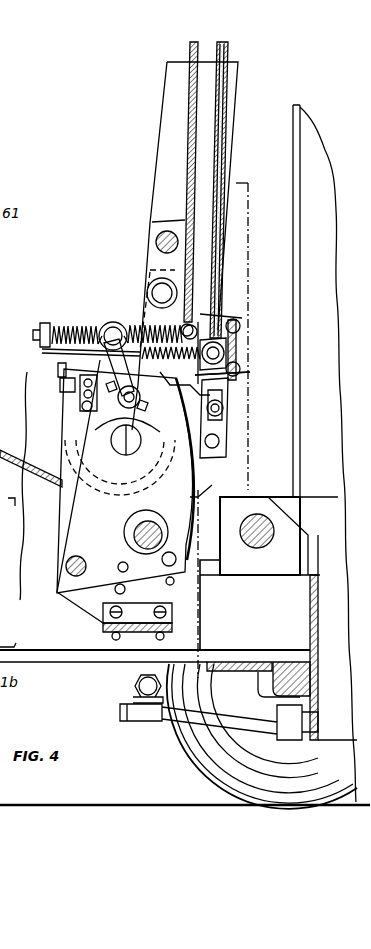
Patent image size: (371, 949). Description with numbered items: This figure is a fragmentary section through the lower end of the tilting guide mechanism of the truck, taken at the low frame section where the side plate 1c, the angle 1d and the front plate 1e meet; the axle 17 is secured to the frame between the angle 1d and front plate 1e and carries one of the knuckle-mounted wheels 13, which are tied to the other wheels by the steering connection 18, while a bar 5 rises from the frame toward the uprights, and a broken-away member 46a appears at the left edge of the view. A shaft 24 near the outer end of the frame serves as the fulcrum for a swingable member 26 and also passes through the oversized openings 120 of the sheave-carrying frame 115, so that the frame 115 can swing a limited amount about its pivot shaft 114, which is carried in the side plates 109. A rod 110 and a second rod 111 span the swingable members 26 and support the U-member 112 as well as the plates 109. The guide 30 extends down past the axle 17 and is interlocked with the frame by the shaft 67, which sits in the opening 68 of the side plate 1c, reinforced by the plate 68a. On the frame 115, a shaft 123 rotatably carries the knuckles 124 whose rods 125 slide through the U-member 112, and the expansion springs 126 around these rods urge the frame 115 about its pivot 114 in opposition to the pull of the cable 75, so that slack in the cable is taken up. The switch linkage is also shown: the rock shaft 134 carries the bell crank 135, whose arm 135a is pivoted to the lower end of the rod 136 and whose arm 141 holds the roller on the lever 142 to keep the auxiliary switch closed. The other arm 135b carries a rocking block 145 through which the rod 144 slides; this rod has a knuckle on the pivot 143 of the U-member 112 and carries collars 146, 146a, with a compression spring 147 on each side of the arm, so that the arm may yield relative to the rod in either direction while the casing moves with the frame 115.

The cable 75 is at (190, 112).
The swingable member 26 is at (228, 102).
The rod 136 is at (221, 131).
The U-member 112 is at (155, 265).
The second rod 111 is at (156, 242).
The rod 110 is at (147, 293).
The bar 5 is at (179, 678).
The guide 30 is at (293, 372).
The opening 68 is at (280, 522).
The reinforcing plate 68a is at (255, 503).
The shaft 67 is at (247, 552).
The front plate 1e is at (316, 582).
The axle 17 is at (285, 662).
The angle 1d is at (225, 662).
The wheel 13 is at (180, 740).
The steering connection 18 is at (120, 712).
The shaft 24 is at (90, 538).
The frame 115 is at (120, 467).
The rock shaft 134 is at (120, 462).
The bell crank 135 is at (139, 442).
The arm 141 is at (122, 408).
The block 145 is at (108, 326).
The rod 144 is at (56, 328).
The compression spring 147 is at (66, 325).
The collar 146 is at (184, 327).
The collar 146a is at (42, 334).
The rod 125 is at (85, 351).
The arm 135b is at (70, 372).
The lever 142 is at (80, 392).
The rod 46a is at (60, 434).
The side plate 1c is at (122, 493).
The side plate 109 is at (75, 497).
The opening 120 is at (125, 528).
The shaft 114 is at (68, 572).
The pivot 143 is at (212, 292).
The knuckle 124 is at (232, 322).
The shaft 123 is at (240, 346).
The expansion spring 126 is at (238, 382).
The arm 135a is at (223, 408).